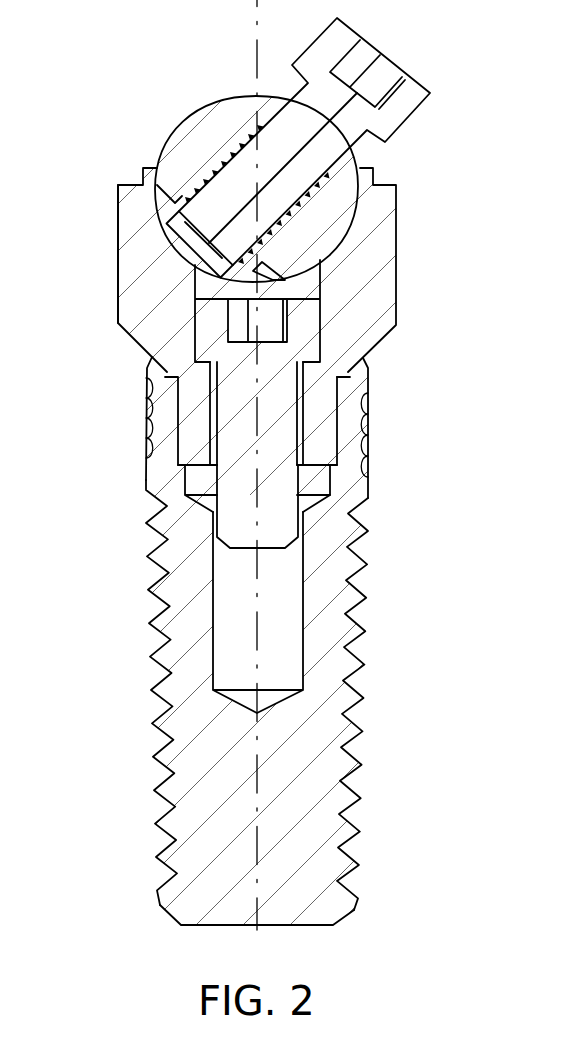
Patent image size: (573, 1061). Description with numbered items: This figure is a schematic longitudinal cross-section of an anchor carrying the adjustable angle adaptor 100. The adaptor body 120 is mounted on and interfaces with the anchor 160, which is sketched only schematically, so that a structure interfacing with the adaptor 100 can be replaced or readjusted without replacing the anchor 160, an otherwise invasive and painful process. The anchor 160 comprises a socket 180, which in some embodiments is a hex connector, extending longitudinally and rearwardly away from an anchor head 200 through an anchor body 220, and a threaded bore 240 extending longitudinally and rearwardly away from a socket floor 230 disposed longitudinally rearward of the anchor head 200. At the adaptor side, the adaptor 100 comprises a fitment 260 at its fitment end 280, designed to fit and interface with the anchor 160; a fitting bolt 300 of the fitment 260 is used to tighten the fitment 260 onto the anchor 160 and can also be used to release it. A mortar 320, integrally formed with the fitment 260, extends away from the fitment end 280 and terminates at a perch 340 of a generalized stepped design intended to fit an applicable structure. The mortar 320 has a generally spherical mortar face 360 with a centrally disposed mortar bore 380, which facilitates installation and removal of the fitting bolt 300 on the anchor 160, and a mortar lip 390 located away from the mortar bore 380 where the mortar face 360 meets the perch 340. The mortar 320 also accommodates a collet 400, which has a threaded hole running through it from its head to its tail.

The adjustable angle adaptor 100 is at (236, 48).
The adaptor body 120 is at (415, 271).
The anchor 160 is at (122, 677).
The socket 180 is at (332, 466).
The anchor head 200 is at (152, 370).
The anchor body 220 is at (213, 838).
The socket floor 230 is at (245, 465).
The threaded bore 240 is at (213, 593).
The fitment 260 is at (302, 400).
The fitment end 280 is at (333, 466).
The fitting bolt 300 is at (212, 314).
The mortar 320 is at (150, 240).
The perch 340 is at (378, 188).
The mortar face 360 is at (258, 235).
The mortar bore 380 is at (364, 400).
The mortar lip 390 is at (300, 148).
The collet 400 is at (330, 202).